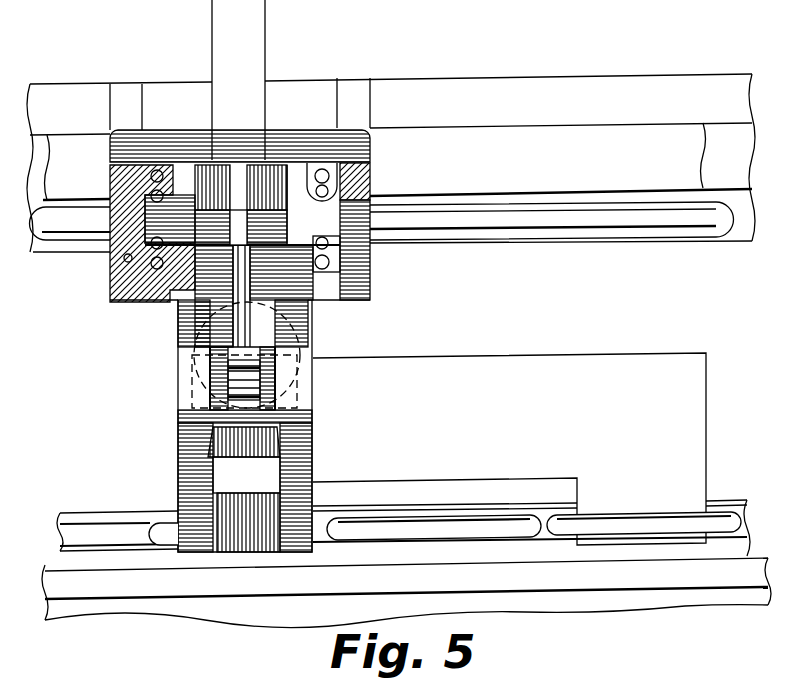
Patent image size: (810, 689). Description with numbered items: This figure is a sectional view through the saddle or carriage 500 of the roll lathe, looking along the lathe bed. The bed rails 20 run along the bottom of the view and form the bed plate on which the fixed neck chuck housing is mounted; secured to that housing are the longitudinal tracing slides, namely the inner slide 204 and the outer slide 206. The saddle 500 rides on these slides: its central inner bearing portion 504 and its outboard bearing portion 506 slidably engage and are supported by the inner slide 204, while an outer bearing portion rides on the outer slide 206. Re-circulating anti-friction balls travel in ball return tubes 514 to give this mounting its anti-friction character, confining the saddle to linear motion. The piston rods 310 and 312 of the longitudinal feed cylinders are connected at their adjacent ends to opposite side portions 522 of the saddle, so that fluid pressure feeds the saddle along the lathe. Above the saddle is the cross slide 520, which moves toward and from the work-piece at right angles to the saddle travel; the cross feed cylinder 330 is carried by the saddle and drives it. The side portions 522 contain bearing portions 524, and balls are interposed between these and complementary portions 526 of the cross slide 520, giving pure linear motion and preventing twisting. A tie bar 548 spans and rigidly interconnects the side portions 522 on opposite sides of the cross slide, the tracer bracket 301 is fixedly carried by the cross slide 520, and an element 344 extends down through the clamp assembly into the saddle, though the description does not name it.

The bed rails 20 is at (577, 595).
The inner slide 204 is at (488, 545).
The outer slide 206 is at (578, 145).
The tracer bracket 301 is at (222, 40).
The piston rod 310 is at (63, 249).
The piston rod 312 is at (560, 236).
The cross feed cylinder 330 is at (293, 358).
The drive shaft 344 is at (240, 208).
The saddle 500 is at (178, 422).
The inner bearing portion 504 is at (318, 478).
The outboard bearing portion 506 is at (700, 489).
The ball return tubes 514 is at (333, 528).
The cross slide 520 is at (297, 169).
The side portions of the saddle 522 is at (372, 168).
The bearing portions 524 is at (340, 183).
The complementary portions of the cross slide 526 is at (372, 242).
The tie bar 548 is at (188, 149).